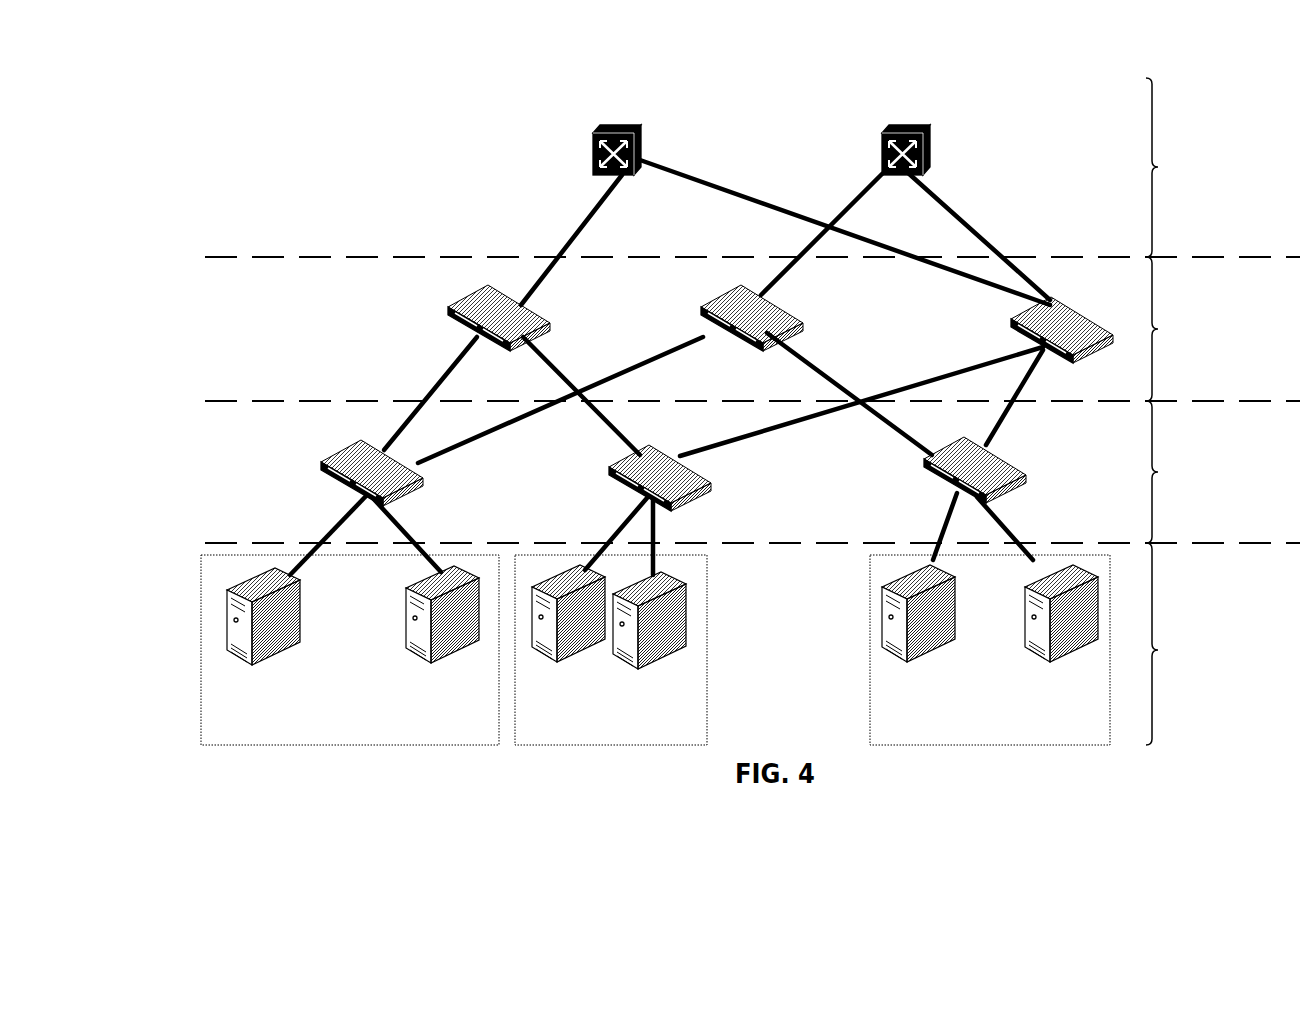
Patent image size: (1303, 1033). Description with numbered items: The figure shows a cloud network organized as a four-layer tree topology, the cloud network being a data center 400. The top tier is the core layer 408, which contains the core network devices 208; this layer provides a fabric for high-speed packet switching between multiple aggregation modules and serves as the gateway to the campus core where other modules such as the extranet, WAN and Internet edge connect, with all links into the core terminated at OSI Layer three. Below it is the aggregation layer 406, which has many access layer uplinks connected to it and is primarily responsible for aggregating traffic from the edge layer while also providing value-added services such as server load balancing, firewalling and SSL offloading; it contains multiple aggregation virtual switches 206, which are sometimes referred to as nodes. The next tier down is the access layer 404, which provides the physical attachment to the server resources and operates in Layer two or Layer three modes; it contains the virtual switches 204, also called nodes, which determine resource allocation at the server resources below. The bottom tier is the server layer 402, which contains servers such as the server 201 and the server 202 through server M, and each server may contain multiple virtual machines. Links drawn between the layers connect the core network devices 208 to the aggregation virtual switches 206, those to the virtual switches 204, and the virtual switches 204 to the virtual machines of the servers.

The data center 400 is at (900, 32).
The core network devices 208 is at (421, 153).
The aggregation virtual switches 206 is at (378, 310).
The virtual switches 204 is at (380, 429).
The core layer 408 is at (1243, 195).
The aggregation layer 406 is at (1270, 355).
The access layer 404 is at (1212, 506).
The server layer 402 is at (1212, 625).
The server 201 is at (350, 650).
The server 202 is at (611, 650).